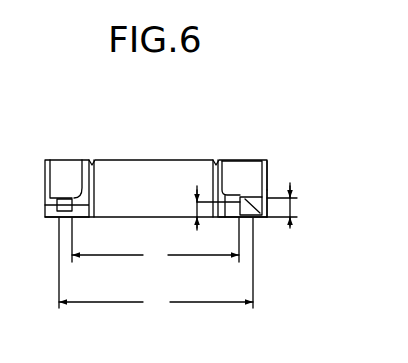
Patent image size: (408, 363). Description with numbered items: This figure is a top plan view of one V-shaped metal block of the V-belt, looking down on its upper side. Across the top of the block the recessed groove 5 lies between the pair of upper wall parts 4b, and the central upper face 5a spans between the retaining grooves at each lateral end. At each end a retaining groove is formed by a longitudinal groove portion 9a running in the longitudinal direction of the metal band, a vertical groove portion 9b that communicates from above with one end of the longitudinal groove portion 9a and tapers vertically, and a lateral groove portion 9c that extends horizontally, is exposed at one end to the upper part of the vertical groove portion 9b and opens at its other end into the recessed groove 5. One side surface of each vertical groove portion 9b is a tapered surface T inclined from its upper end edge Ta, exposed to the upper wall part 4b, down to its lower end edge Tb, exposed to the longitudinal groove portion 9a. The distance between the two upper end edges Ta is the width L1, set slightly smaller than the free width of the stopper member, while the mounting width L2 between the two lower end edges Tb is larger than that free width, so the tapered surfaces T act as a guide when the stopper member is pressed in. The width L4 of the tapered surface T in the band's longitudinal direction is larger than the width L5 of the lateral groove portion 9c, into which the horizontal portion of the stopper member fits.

The main body 5a is at (152, 172).
The recessed groove 5 is at (214, 178).
The upper end edge Ta is at (80, 194).
The upper wall part 4b is at (247, 167).
The tapered surface T is at (55, 210).
The lower end edge Tb is at (52, 213).
The longitudinal groove portion 9a is at (269, 166).
The vertical groove portion 9b is at (268, 197).
The lateral groove portion 9c is at (227, 214).
The width L1 is at (155, 244).
The mounting width L2 is at (156, 267).
The width L4 is at (292, 207).
The width L5 is at (196, 207).